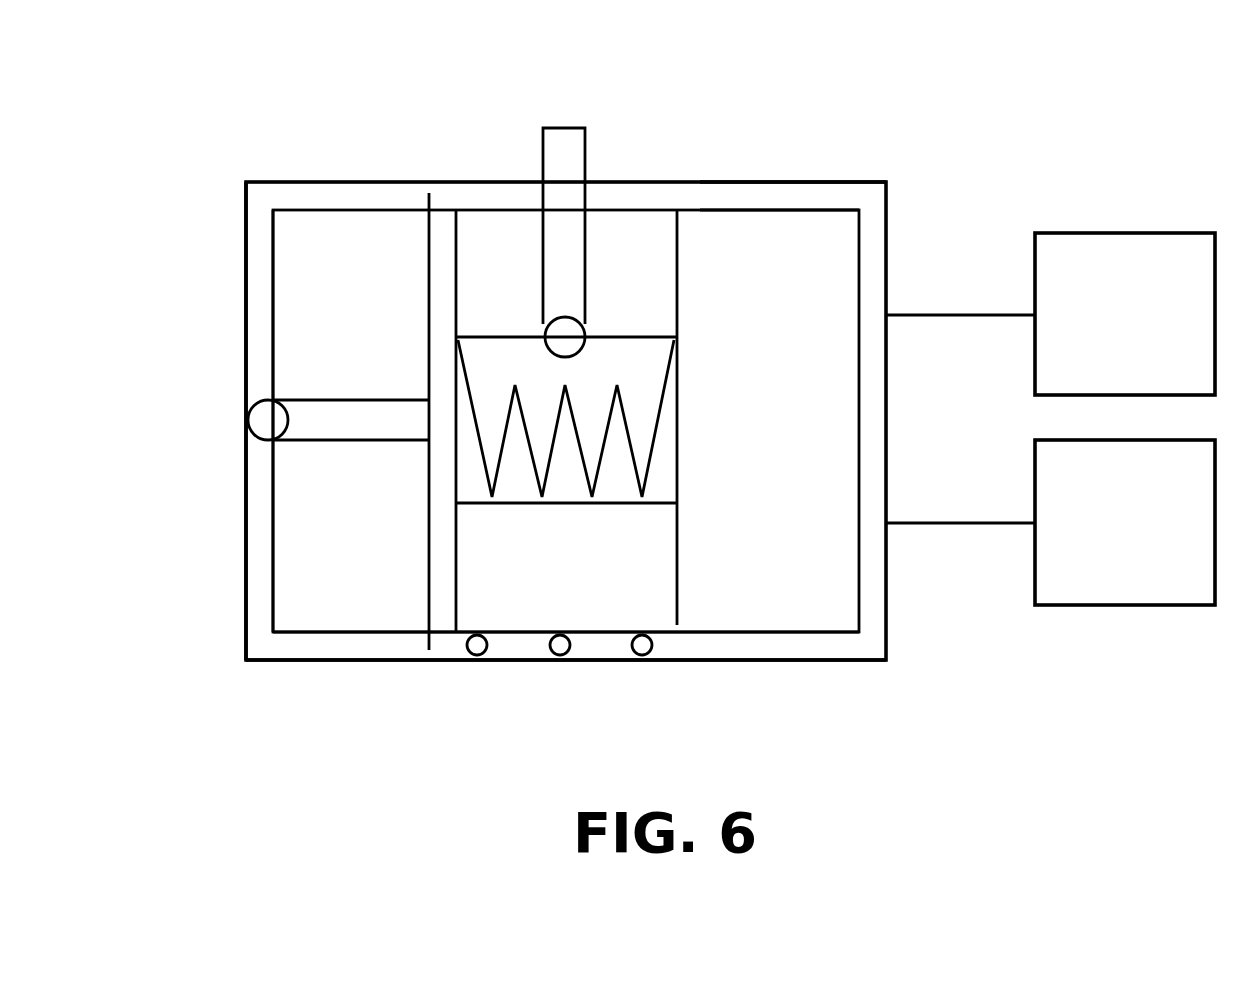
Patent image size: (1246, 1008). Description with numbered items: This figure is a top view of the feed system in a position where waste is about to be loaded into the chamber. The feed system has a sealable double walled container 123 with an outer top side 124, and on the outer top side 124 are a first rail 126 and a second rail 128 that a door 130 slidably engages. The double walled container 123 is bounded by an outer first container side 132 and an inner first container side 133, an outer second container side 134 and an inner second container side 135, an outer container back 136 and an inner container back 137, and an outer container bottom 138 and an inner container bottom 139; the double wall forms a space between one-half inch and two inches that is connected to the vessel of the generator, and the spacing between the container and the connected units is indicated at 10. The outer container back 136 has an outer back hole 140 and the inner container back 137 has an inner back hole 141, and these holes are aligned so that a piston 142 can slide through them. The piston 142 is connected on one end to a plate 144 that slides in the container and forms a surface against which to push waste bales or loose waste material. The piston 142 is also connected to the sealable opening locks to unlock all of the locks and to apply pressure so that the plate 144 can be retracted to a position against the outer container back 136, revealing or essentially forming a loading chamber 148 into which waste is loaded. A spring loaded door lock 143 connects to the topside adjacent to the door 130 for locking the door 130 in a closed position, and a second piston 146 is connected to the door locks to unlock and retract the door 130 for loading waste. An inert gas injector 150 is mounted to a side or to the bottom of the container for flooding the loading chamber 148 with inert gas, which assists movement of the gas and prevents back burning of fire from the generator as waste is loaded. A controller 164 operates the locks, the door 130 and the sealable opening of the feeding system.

The gap / spacing 10 is at (896, 472).
The sealable double walled container 123 is at (279, 176).
The outer top side 124 is at (363, 180).
The first rail 126 is at (429, 190).
The second rail 128 is at (677, 210).
The door 130 is at (492, 360).
The outer first container side 132 is at (765, 180).
The inner first container side 133 is at (818, 210).
The outer second container side 134 is at (740, 660).
The inner second container side 135 is at (272, 476).
The outer container back 136 is at (248, 418).
The inner container back 137 is at (832, 632).
The outer container bottom 138 is at (368, 660).
The inner container bottom 139 is at (308, 632).
The outer back hole 140 is at (255, 412).
The inner back hole 141 is at (255, 275).
The piston 142 is at (298, 522).
The spring loaded door lock 143 is at (560, 650).
The plate 144 is at (430, 550).
The second piston 146 is at (570, 128).
The loading chamber 148 is at (642, 650).
The inert gas injector 150 is at (477, 650).
The controller 164 is at (1110, 226).